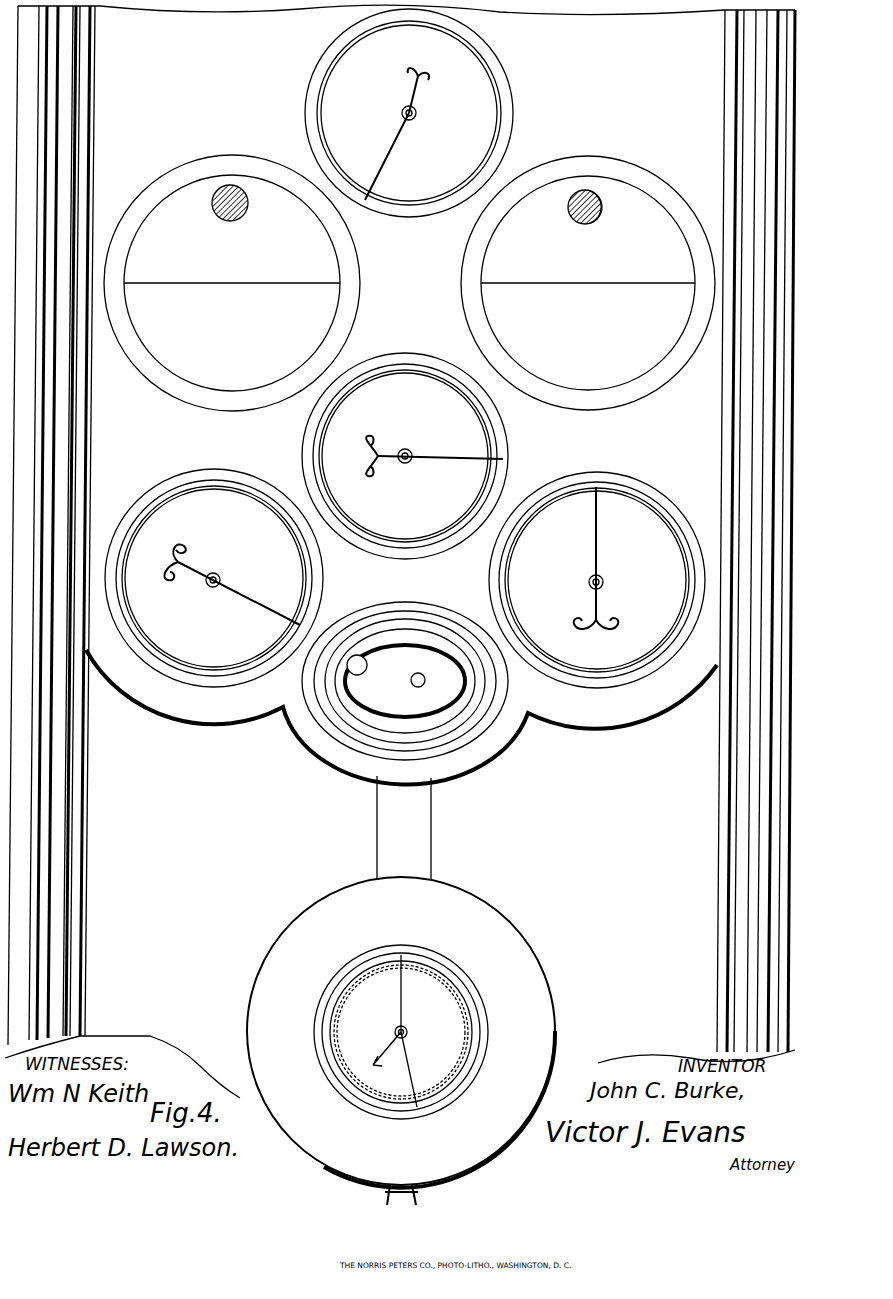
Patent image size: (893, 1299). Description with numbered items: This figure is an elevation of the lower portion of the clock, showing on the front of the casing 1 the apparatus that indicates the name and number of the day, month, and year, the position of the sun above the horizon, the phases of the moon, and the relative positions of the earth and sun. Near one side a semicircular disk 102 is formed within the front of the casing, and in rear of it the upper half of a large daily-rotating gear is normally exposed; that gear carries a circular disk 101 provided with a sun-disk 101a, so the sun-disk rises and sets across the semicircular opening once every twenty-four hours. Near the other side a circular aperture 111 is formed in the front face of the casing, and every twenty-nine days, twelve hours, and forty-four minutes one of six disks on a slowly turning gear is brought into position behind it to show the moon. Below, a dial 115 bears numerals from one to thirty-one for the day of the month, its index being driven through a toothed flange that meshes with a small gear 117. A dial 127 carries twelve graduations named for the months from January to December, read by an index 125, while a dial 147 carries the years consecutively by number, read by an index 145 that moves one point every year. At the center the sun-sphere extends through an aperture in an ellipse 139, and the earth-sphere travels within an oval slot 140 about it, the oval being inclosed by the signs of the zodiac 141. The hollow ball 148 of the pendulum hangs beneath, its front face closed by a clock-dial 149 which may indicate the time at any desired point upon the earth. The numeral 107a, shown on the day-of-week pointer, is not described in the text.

The casing 1 is at (400, 551).
The circular disk 101 is at (232, 283).
The sun-disk 101a is at (229, 186).
The semicircular disk 102 is at (232, 266).
The day of week pointer 107a is at (386, 145).
The circular aperture 111 is at (585, 190).
The dial 115 is at (496, 440).
The small gear 117 is at (420, 452).
The index 125 is at (232, 584).
The dial 127 is at (195, 488).
The ellipse 139 is at (420, 640).
The oval slot 140 is at (381, 650).
The signs of the zodiac 141 is at (352, 730).
The index 145 is at (592, 543).
The dial 147 is at (628, 492).
The ball of the pendulum 148 is at (401, 1041).
The clock-dial 149 is at (471, 1012).